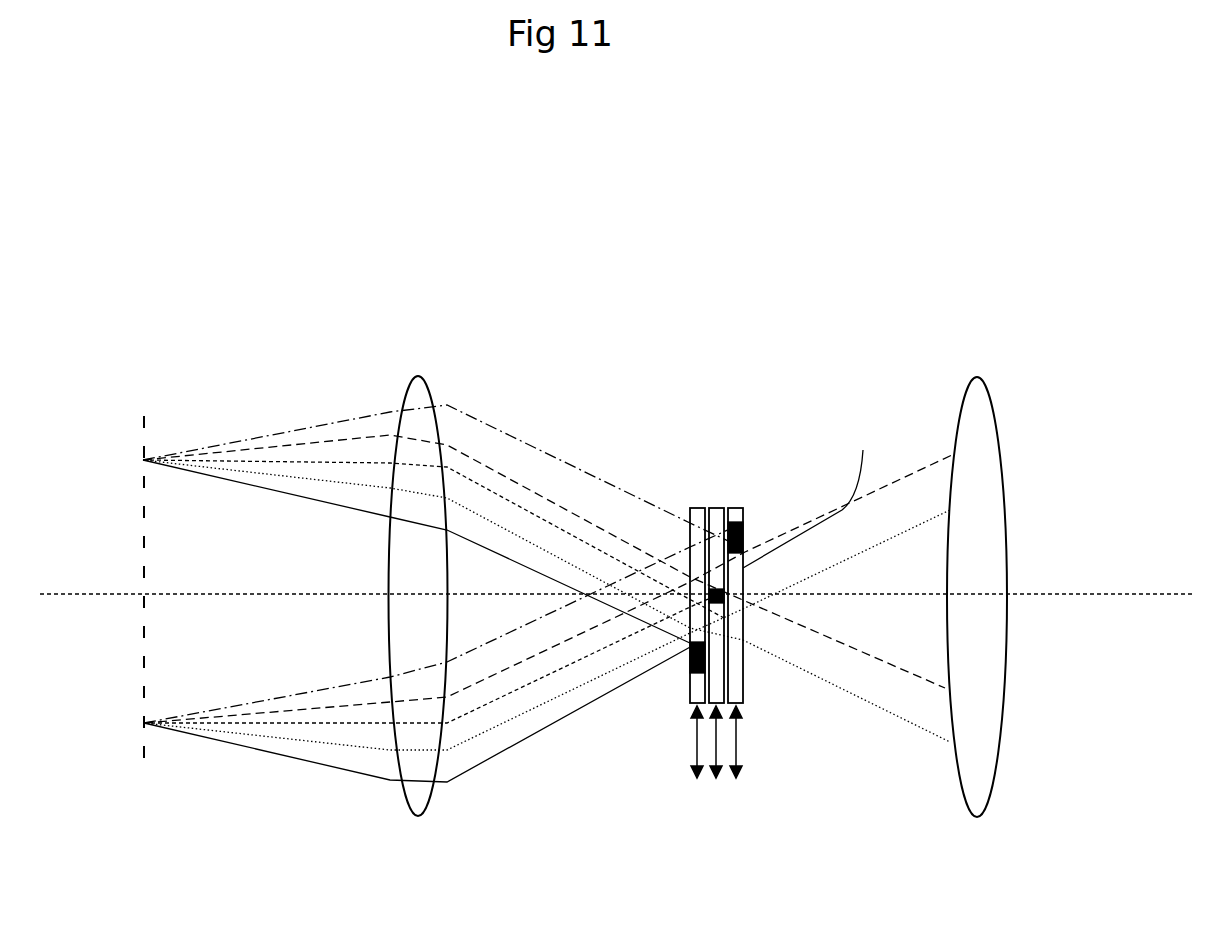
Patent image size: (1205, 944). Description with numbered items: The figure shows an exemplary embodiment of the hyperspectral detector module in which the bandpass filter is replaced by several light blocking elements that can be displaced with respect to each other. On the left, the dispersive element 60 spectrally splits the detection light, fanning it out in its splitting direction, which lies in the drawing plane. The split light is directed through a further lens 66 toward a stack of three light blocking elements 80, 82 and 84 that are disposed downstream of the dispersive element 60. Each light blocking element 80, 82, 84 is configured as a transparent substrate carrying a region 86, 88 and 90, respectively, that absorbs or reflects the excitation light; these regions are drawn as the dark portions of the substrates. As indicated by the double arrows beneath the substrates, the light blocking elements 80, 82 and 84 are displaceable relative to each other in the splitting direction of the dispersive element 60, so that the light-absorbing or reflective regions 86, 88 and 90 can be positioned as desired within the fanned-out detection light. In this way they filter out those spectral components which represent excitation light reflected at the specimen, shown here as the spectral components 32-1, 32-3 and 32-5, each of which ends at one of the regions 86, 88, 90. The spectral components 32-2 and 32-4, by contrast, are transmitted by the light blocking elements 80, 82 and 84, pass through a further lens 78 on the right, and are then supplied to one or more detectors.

The dispersive element 60 is at (143, 458).
The further lens 66 is at (411, 383).
The further lens 78 is at (994, 383).
The light blocking element 80 is at (695, 507).
The light blocking element 82 is at (715, 505).
The light blocking element 84 is at (732, 505).
The light-absorbing or reflective region 86 is at (693, 677).
The light-absorbing or reflective region 88 is at (719, 604).
The light-absorbing or reflective region 90 is at (743, 522).
The spectral component 32-1 is at (543, 733).
The spectral component 32-2 is at (858, 557).
The spectral component 32-3 is at (510, 690).
The spectral component 32-4 is at (893, 476).
The spectral component 32-5 is at (465, 655).